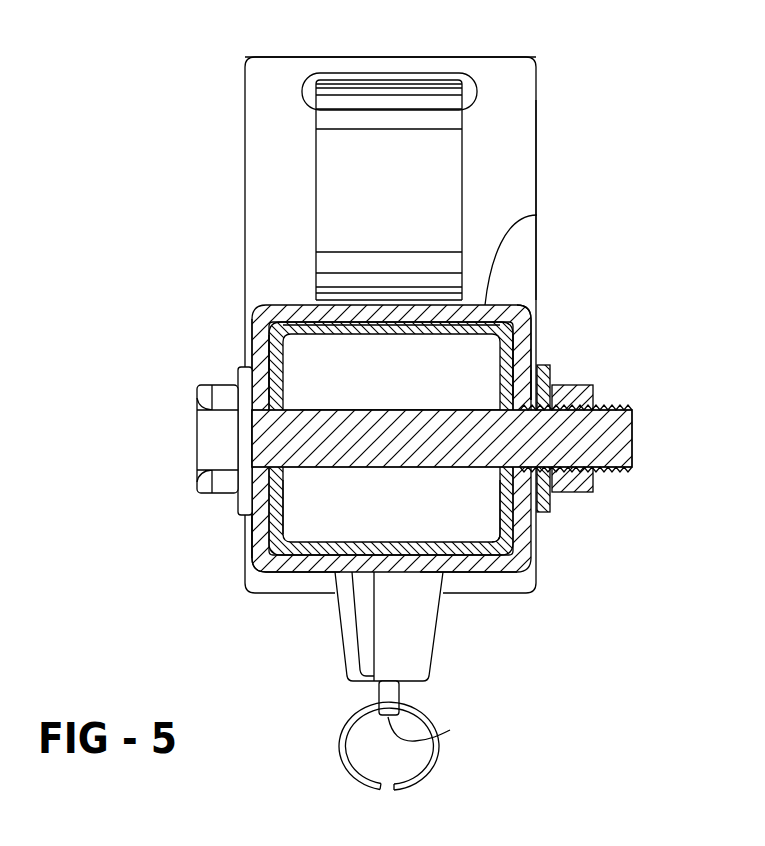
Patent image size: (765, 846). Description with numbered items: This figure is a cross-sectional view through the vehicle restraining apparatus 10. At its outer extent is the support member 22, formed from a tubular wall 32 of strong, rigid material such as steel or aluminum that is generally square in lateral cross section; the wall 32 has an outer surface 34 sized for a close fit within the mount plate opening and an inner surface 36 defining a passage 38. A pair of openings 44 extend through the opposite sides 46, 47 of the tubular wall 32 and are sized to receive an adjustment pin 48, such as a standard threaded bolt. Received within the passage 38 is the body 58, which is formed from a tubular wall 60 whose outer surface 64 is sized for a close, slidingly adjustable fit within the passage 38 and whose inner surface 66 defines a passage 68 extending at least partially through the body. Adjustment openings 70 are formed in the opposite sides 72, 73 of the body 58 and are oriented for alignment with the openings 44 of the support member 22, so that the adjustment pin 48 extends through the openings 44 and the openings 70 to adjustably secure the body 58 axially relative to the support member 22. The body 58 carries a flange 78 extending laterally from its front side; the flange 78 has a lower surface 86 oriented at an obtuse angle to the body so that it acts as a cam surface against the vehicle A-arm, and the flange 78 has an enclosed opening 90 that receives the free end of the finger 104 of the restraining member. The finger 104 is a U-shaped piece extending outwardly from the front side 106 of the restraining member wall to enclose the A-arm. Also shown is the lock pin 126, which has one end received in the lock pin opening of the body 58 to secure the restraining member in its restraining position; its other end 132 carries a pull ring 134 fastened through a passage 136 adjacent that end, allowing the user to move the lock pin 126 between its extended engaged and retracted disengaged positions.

The vehicle restraining apparatus 10 is at (601, 82).
The support member 22 is at (290, 300).
The tubular wall 32 is at (524, 312).
The outer surface 34 is at (517, 344).
The inner surface 36 is at (270, 330).
The passage 38 is at (510, 318).
The openings 44 is at (242, 414).
The side of tubular wall 46 is at (268, 543).
The side of tubular wall 47 is at (552, 516).
The adjustment pin 48 is at (633, 437).
The body 58 is at (286, 497).
The tubular wall 60 is at (510, 538).
The outer surface 64 is at (475, 556).
The inner surface 66 is at (297, 518).
The passage 68 is at (286, 552).
The adjustment openings 70 is at (305, 418).
The side of body 72 is at (260, 352).
The side of body 73 is at (543, 350).
The flange 78 is at (537, 135).
The lower surface 86 is at (513, 102).
The enclosed opening 90 is at (466, 78).
The finger 104 is at (315, 158).
The front side 106 is at (537, 215).
The lock pin 126 is at (380, 693).
The end of lock pin 132 is at (450, 730).
The ring 134 is at (420, 778).
The passage 136 is at (407, 702).